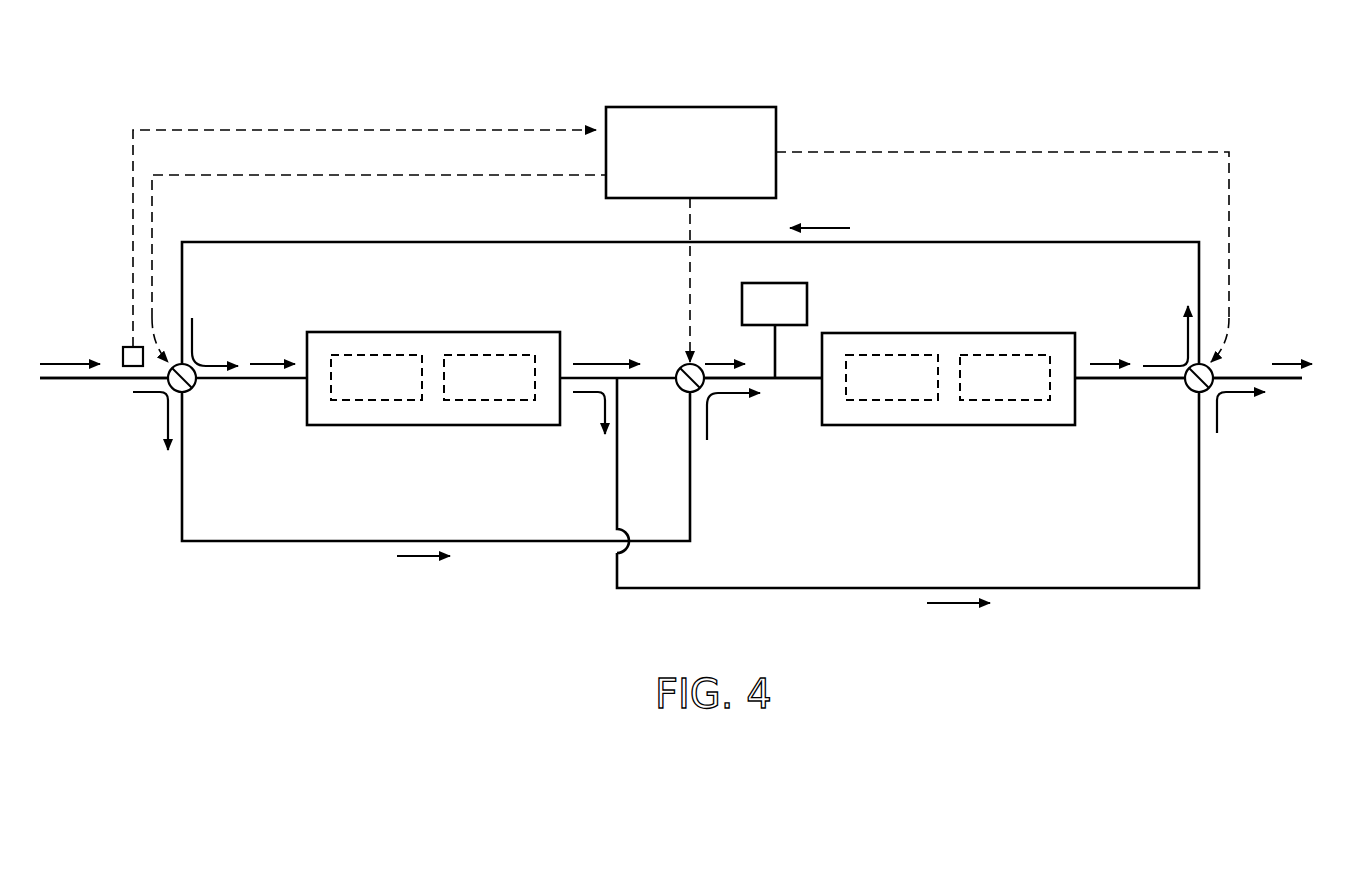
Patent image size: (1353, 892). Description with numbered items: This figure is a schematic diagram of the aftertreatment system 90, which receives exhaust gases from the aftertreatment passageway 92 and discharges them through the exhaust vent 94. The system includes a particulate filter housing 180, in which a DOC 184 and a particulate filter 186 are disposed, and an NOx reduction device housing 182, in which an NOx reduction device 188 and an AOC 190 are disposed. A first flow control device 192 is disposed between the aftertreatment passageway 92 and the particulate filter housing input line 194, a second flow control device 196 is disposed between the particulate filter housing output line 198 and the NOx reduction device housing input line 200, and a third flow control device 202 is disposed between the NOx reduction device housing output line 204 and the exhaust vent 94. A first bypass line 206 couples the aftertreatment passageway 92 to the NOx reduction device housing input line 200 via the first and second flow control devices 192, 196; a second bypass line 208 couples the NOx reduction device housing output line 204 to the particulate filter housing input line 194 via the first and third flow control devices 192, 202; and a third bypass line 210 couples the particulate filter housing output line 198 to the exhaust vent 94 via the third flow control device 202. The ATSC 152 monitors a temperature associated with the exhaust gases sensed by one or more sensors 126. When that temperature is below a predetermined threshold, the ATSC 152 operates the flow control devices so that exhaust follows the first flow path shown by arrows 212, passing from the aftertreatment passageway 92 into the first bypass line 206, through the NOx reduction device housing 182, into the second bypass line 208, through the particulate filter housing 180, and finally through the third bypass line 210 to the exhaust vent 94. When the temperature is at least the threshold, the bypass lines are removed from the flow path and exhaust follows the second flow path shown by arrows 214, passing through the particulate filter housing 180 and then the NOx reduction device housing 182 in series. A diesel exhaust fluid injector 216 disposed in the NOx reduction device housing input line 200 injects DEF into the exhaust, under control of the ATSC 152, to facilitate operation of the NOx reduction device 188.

The aftertreatment system 90 is at (938, 78).
The aftertreatment passageway 92 is at (88, 386).
The exhaust vent 94 is at (1280, 384).
The temperature sensor 126 is at (124, 348).
The ATSC 152 is at (690, 107).
The particulate filter housing 180 is at (425, 425).
The NOx reduction device housing 182 is at (945, 425).
The DOC 184 is at (375, 355).
The particulate filter 186 is at (487, 355).
The NOx reduction device 188 is at (895, 355).
The AOC 190 is at (1005, 355).
The first flow control device 192 is at (190, 392).
The particulate filter housing input line 194 is at (268, 382).
The second flow control device 196 is at (675, 366).
The particulate filter housing output line 198 is at (648, 380).
The NOx reduction device housing input line 200 is at (797, 380).
The third flow control device 202 is at (1190, 393).
The NOx reduction device housing output line 204 is at (1105, 380).
The first bypass line 206 is at (258, 541).
The second bypass line 208 is at (1052, 242).
The third bypass line 210 is at (830, 590).
The arrows 212 is at (197, 332).
The arrows 214 is at (262, 362).
The diesel exhaust fluid injector 216 is at (780, 283).